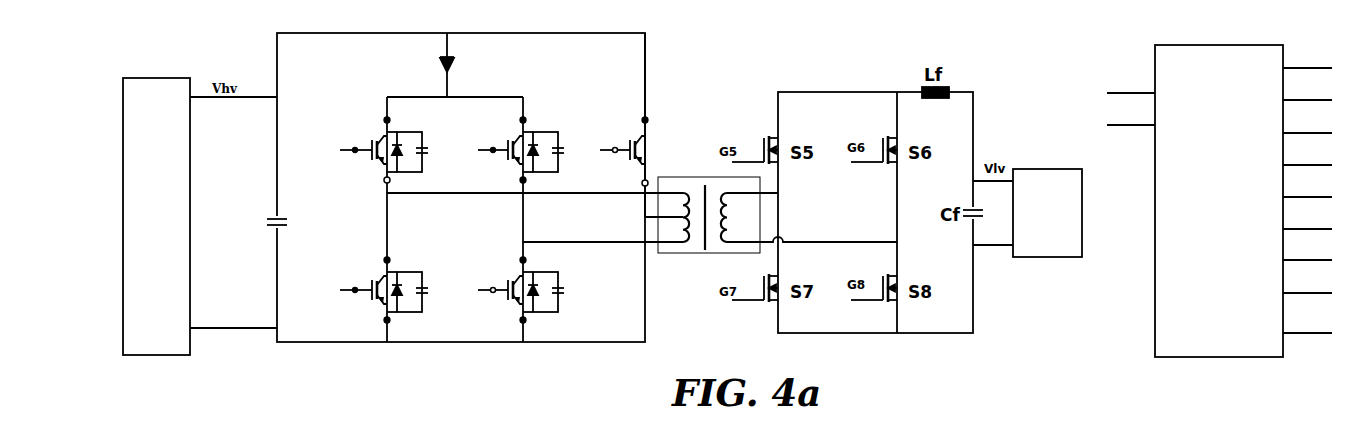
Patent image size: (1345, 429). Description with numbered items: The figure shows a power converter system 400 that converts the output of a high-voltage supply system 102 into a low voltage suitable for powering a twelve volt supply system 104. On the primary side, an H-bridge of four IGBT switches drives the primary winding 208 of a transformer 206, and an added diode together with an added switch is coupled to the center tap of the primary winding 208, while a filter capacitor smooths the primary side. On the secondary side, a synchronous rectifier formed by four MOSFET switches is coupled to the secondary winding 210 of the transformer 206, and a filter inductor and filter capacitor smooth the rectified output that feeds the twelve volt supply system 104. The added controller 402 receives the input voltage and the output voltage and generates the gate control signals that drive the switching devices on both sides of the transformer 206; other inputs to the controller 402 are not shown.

The high-voltage supply system 102 is at (172, 77).
The 12 V supply system 104 is at (1065, 168).
The transformer 206 is at (690, 223).
The primary winding 208 is at (682, 227).
The secondary winding 210 is at (722, 209).
The power converter system 400 is at (231, 44).
The controller 402 is at (1219, 201).